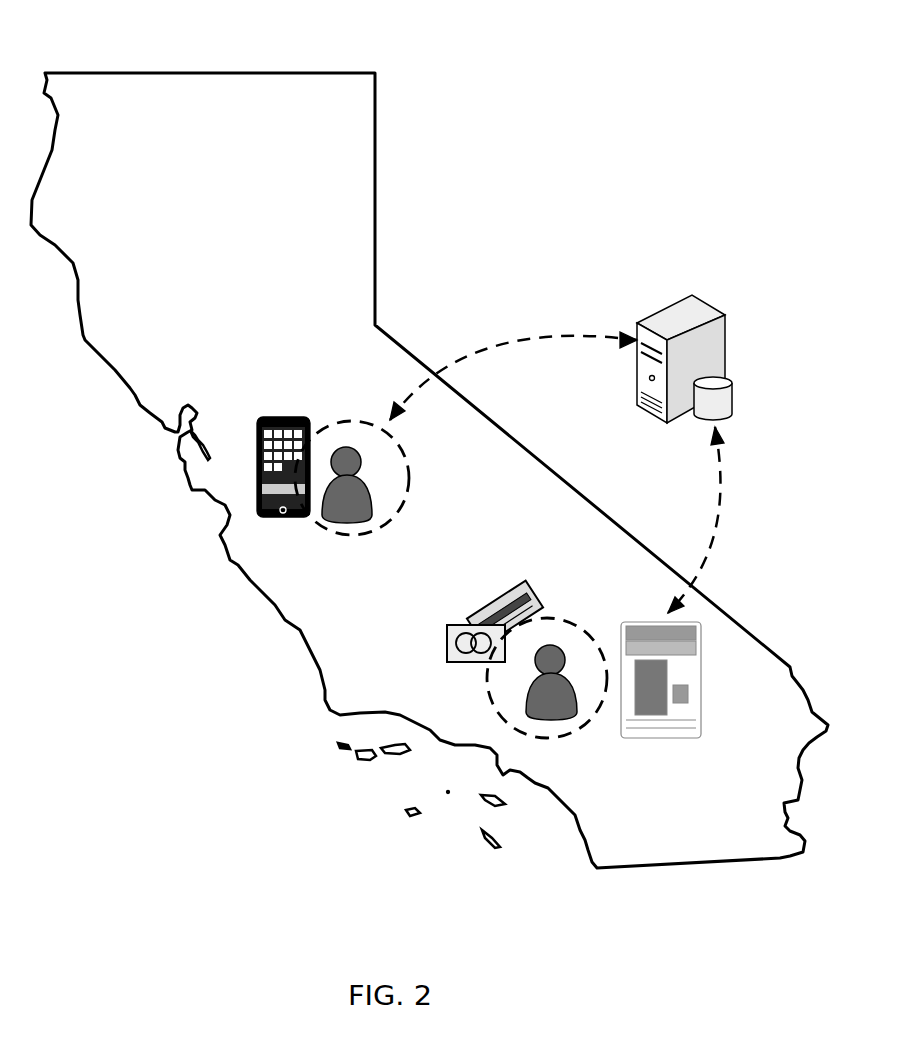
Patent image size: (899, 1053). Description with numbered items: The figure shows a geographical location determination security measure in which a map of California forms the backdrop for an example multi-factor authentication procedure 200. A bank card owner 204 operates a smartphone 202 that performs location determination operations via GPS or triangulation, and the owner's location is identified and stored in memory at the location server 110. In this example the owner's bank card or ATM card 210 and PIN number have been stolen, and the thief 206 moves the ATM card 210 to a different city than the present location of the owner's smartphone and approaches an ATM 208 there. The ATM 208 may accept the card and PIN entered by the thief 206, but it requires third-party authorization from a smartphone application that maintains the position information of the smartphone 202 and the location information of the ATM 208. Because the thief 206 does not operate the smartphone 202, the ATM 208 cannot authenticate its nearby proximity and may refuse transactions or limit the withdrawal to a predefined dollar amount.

The multi-factor authentication procedure 200 is at (720, 51).
The location server 110 is at (614, 368).
The smartphone 202 is at (305, 415).
The bank card owner 204 is at (351, 519).
The thief 206 is at (589, 735).
The ATM 208 is at (688, 623).
The ATM card 210 is at (492, 583).